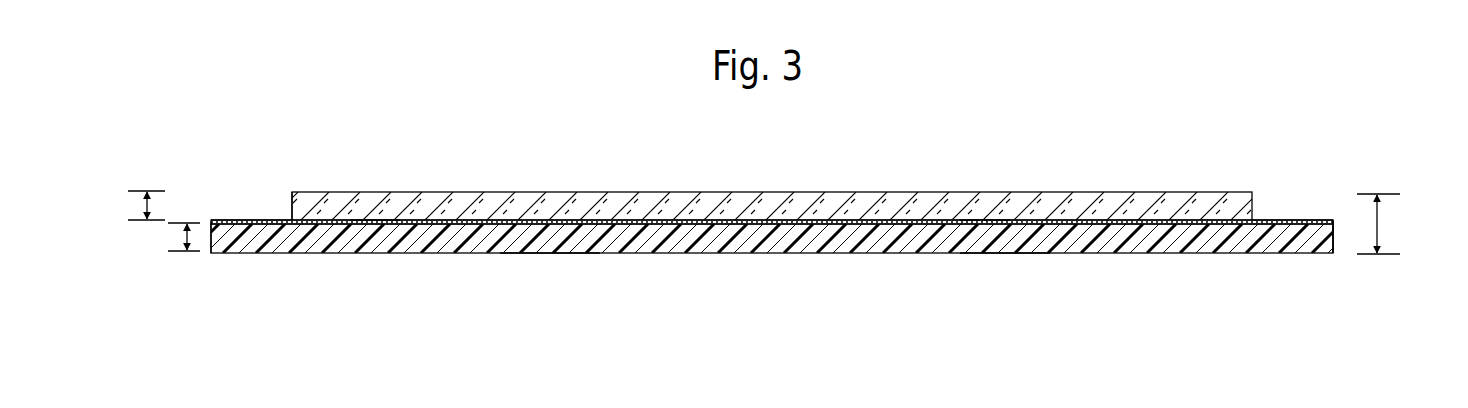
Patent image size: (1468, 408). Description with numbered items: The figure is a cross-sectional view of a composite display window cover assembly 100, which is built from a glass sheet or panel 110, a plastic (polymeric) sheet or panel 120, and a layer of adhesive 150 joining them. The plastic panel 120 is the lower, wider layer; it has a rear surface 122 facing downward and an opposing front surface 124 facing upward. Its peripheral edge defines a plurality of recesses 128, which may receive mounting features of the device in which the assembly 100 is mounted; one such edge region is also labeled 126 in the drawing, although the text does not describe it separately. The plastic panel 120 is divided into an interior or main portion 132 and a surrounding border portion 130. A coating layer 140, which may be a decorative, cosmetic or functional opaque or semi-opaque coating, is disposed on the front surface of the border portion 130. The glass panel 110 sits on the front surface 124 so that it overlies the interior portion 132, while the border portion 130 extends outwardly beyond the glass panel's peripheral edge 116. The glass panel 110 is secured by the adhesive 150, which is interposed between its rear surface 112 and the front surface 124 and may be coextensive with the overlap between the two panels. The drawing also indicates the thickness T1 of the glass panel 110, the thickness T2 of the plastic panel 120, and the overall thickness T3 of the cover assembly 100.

The composite display window cover assembly 100 is at (936, 138).
The glass sheet or panel 110 is at (926, 176).
The rear surface of the glass panel 112 is at (503, 232).
The peripheral edge of the glass panel 116 is at (290, 213).
The plastic sheet or panel 120 is at (828, 258).
The rear surface of the plastic panel 122 is at (1003, 254).
The front surface of the plastic panel 124 is at (372, 225).
The side edge of substrate 126 is at (1334, 234).
The recesses 128 is at (216, 252).
The border portion 130 is at (240, 223).
The interior or main portion 132 is at (548, 253).
The coating layer 140 is at (1295, 220).
The layer of adhesive 150 is at (985, 223).
The thickness of the glass panel T1 is at (144, 204).
The thickness of the plastic panel T2 is at (183, 238).
The overall thickness of the cover assembly T3 is at (1380, 225).